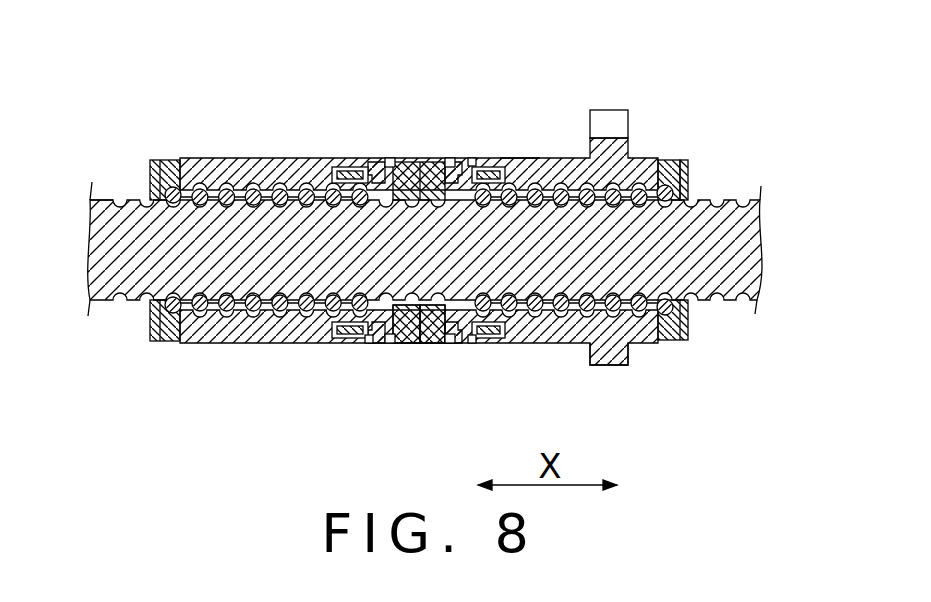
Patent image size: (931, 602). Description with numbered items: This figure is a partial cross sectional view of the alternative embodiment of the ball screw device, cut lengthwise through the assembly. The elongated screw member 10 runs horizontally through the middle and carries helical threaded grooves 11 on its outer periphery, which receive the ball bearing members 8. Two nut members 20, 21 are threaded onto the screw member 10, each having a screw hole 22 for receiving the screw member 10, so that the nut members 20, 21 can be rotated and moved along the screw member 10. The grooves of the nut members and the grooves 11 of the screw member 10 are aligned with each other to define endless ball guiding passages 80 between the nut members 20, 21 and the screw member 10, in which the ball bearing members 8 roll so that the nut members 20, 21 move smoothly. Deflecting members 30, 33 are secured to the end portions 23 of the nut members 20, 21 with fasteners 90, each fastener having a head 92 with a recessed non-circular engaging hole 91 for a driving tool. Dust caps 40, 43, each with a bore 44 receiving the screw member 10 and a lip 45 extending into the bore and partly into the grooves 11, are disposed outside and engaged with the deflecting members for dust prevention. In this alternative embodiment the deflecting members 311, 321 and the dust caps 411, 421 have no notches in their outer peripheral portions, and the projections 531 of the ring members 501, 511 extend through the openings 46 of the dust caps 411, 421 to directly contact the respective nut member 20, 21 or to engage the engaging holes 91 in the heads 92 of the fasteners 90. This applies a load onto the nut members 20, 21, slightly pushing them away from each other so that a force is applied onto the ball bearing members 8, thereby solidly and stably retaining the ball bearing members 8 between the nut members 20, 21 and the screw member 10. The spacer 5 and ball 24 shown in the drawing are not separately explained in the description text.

The screw member 10 is at (750, 250).
The helical threaded grooves 11 is at (97, 197).
The nut member 20 is at (243, 170).
The nut member 21 is at (608, 138).
The screw hole 22 is at (513, 167).
The end portions 23 is at (197, 187).
The ball 24 is at (177, 313).
The deflecting member 30 is at (170, 160).
The deflecting member 33 is at (677, 160).
The dust cap 40 is at (152, 342).
The dust cap 43 is at (688, 170).
The bore 44 is at (688, 200).
The lip 45 is at (690, 305).
The openings 46 is at (370, 343).
The spacer 5 is at (423, 347).
The ring member 501 is at (407, 333).
The ring member 511 is at (433, 340).
The projections 531 is at (383, 337).
The ball bearing members 8 is at (587, 310).
The endless ball guiding passages 80 is at (553, 195).
The fasteners 90 is at (345, 165).
The engaging hole 91 is at (382, 165).
The head 92 is at (460, 343).
The deflecting member 311 is at (367, 340).
The deflecting member 321 is at (472, 160).
The dust cap 411 is at (390, 160).
The dust cap 421 is at (448, 160).